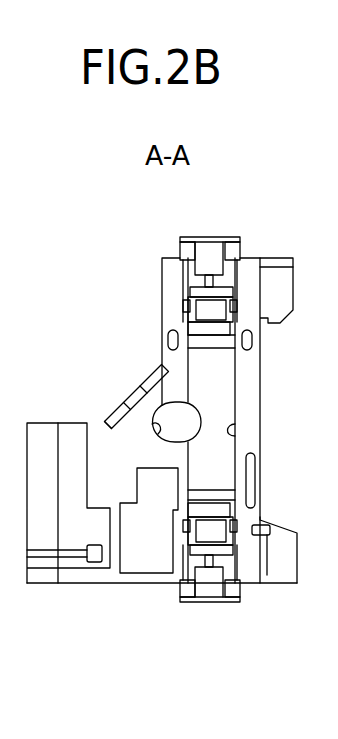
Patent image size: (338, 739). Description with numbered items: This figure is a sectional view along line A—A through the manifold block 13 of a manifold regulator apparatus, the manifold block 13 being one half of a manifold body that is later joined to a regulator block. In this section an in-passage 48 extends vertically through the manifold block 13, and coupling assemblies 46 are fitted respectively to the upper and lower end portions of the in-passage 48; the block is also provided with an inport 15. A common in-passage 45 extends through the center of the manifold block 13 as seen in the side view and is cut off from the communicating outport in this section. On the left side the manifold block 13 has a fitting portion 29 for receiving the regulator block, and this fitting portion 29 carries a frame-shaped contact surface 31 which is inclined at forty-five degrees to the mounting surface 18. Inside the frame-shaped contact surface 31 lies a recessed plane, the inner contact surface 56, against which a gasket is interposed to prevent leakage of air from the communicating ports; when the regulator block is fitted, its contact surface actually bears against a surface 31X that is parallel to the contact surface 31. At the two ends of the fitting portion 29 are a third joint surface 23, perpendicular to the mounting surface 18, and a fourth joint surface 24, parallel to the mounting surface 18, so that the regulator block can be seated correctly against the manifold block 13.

The manifold block 13 is at (55, 587).
The inport 15 is at (243, 273).
The mounting surface 18 is at (262, 343).
The third joint surface 23 is at (48, 423).
The fourth joint surface 24 is at (162, 270).
The fitting portion 29 is at (100, 413).
The contact surface 31 is at (159, 365).
The surface parallel to the contact surface 31X is at (146, 370).
The common in-passage 45 is at (152, 427).
The coupling assembly 46 is at (248, 234).
The in-passage 48 is at (235, 430).
The inner contact surface 56 is at (132, 395).